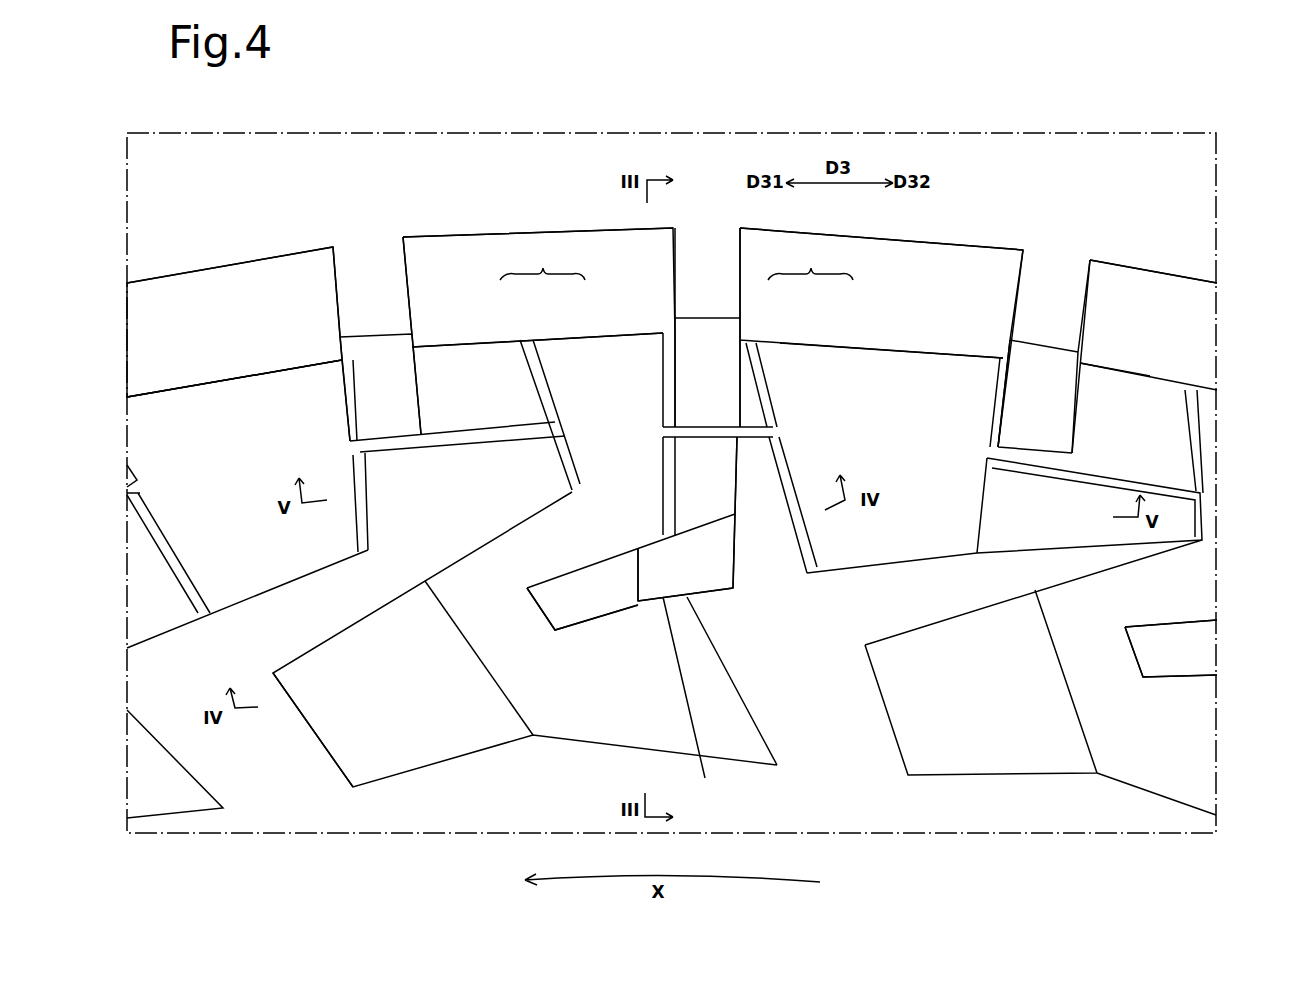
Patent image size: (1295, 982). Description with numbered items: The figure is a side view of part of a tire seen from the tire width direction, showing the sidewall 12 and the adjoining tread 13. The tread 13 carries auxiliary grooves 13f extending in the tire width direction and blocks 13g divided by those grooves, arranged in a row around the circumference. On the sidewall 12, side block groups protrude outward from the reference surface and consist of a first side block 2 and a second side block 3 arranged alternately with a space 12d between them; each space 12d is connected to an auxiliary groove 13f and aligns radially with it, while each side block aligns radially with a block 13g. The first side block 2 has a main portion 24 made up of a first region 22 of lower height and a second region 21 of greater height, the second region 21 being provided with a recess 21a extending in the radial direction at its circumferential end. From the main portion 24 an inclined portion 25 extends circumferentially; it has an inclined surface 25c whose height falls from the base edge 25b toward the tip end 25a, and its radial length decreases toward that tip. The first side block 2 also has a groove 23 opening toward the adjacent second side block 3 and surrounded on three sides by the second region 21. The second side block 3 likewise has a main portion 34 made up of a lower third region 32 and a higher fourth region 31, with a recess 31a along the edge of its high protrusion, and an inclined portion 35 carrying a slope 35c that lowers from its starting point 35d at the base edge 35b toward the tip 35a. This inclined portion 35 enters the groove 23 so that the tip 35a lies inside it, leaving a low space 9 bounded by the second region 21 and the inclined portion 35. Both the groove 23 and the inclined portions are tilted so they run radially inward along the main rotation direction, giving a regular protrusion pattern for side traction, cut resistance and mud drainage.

The first side block 2 is at (461, 333).
The second side block 3 is at (203, 370).
The space 9 is at (585, 606).
The sidewall 12 is at (260, 810).
The space 12d is at (365, 401).
The tread 13 is at (180, 264).
The auxiliary groove 13f is at (386, 301).
The block 13g is at (255, 258).
The second region 21 is at (579, 361).
The recess 21a is at (527, 381).
The first region 22 is at (487, 355).
The groove 23 is at (617, 597).
The main portion 24 is at (1250, 770).
The inclined portion 25 is at (975, 755).
The tip end 25a is at (313, 737).
The base edge 25b is at (497, 710).
The inclined surface 25c is at (393, 750).
The fourth region 31 is at (255, 388).
The recess 31a is at (768, 403).
The third region 32 is at (748, 398).
The main portion 34 is at (810, 261).
The inclined portion 35 is at (920, 621).
The tip 35a is at (633, 570).
The base edge 35b is at (735, 562).
The slope 35c is at (720, 687).
The starting point 35d is at (730, 540).